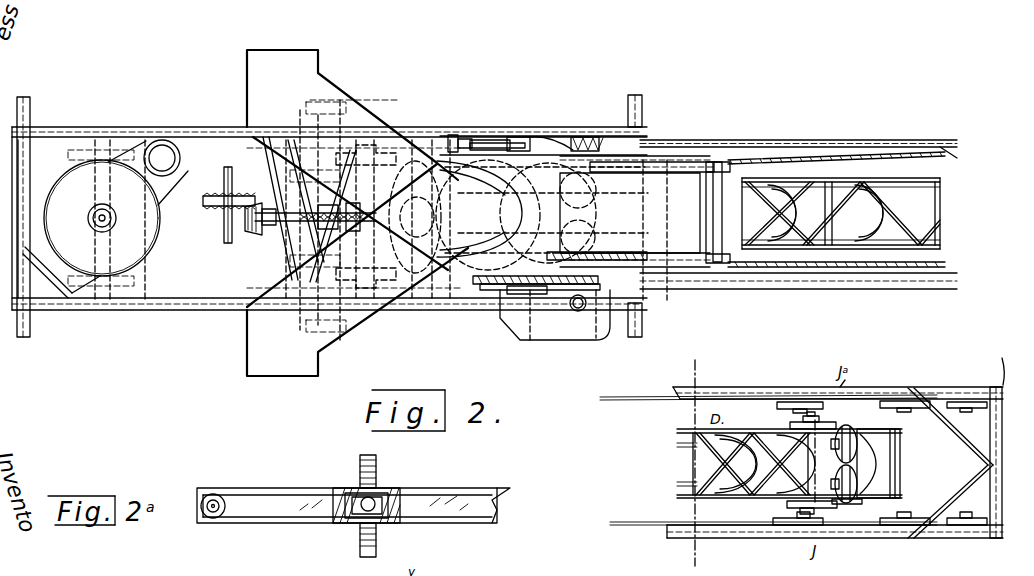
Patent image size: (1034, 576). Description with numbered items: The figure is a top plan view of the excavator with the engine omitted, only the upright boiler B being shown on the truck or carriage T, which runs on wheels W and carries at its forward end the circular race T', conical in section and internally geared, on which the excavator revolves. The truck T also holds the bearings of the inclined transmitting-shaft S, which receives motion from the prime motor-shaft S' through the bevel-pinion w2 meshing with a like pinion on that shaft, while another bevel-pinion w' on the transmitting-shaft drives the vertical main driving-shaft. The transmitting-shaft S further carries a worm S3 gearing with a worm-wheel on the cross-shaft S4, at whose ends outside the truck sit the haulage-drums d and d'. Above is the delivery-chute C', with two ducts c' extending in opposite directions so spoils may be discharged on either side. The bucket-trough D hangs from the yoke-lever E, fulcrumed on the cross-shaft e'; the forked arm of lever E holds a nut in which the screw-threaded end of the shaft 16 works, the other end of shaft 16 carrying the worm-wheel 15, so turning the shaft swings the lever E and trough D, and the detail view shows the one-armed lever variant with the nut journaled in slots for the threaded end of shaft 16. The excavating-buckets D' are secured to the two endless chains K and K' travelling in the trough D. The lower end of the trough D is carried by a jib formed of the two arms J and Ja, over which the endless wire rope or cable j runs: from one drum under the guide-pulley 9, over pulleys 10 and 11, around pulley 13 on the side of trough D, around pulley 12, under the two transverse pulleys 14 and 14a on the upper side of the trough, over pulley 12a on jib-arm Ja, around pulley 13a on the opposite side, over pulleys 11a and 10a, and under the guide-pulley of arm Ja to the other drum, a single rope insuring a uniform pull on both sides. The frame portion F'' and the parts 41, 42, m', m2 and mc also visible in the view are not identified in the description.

In FIG. 2, the guide-pulley 9 is at (628, 158).
In FIG. 2, the pulley 10 is at (822, 521).
In FIG. 2, the pulley 10a is at (801, 401).
In FIG. 2, the pulley 11 is at (905, 513).
In FIG. 2, the pulley 11a is at (906, 412).
In FIG. 2, the pulley 12 is at (967, 513).
In FIG. 2, the pulley 12a is at (955, 462).
In FIG. 2, the pulley 13 is at (788, 504).
In FIG. 2, the pulley 13a is at (800, 420).
In FIG. 2, the pulley 14 is at (851, 507).
In FIG. 2, the pulley 14a is at (865, 458).
In FIG. 2, the worm-wheel 15 is at (449, 134).
In FIG. 2, the shaft 16 is at (478, 140).
In FIG. 2A, the shaft 16 is at (360, 500).
In FIG. 2, the rollers on hull 41 is at (594, 200).
In FIG. 2, the opening in hull 42 is at (417, 217).
In FIG. 2, the boiler B is at (105, 220).
In FIG. 2, the truck or carriage T is at (329, 217).
In FIG. 2, the race T' is at (329, 316).
In FIG. 2, the transmitting-shaft S is at (315, 244).
In FIG. 2, the prime motor-shaft S' is at (221, 195).
In FIG. 2, the worm S3 is at (332, 205).
In FIG. 2, the cross-shaft S4 is at (318, 221).
In FIG. 2, the bevel-pinion w' is at (215, 200).
In FIG. 2A, the bevel-pinion w' is at (359, 521).
In FIG. 2, the bevel-pinion w2 is at (247, 227).
In FIG. 2, the wheels W is at (390, 150).
In FIG. 2, the ducts c' is at (357, 213).
In FIG. 2, the haulage-drum d is at (322, 341).
In FIG. 2, the haulage-drum d' is at (355, 94).
In FIG. 2, the delivery-chute C' is at (518, 216).
In FIG. 2, the housing F'' is at (543, 127).
In FIG. 2, the yoke-lever E is at (683, 162).
In FIG. 2A, the yoke-lever E is at (353, 493).
In FIG. 2A, the cross-shaft e' is at (213, 490).
In FIG. 2, the housing m' is at (555, 315).
In FIG. 2, the plate m2 is at (576, 257).
In FIG. 2, the bracket mc is at (520, 285).
In FIG. 2, the jib-arm Ja is at (812, 140).
In FIG. 2, the jib-arm J is at (798, 281).
In FIG. 2, the wire rope or cable j is at (948, 158).
In FIG. 2, the bucket-trough D is at (823, 209).
In FIG. 2, the excavating-buckets D' is at (842, 213).
In FIG. 2, the endless chain K is at (789, 213).
In FIG. 2, the endless chain K' is at (886, 213).